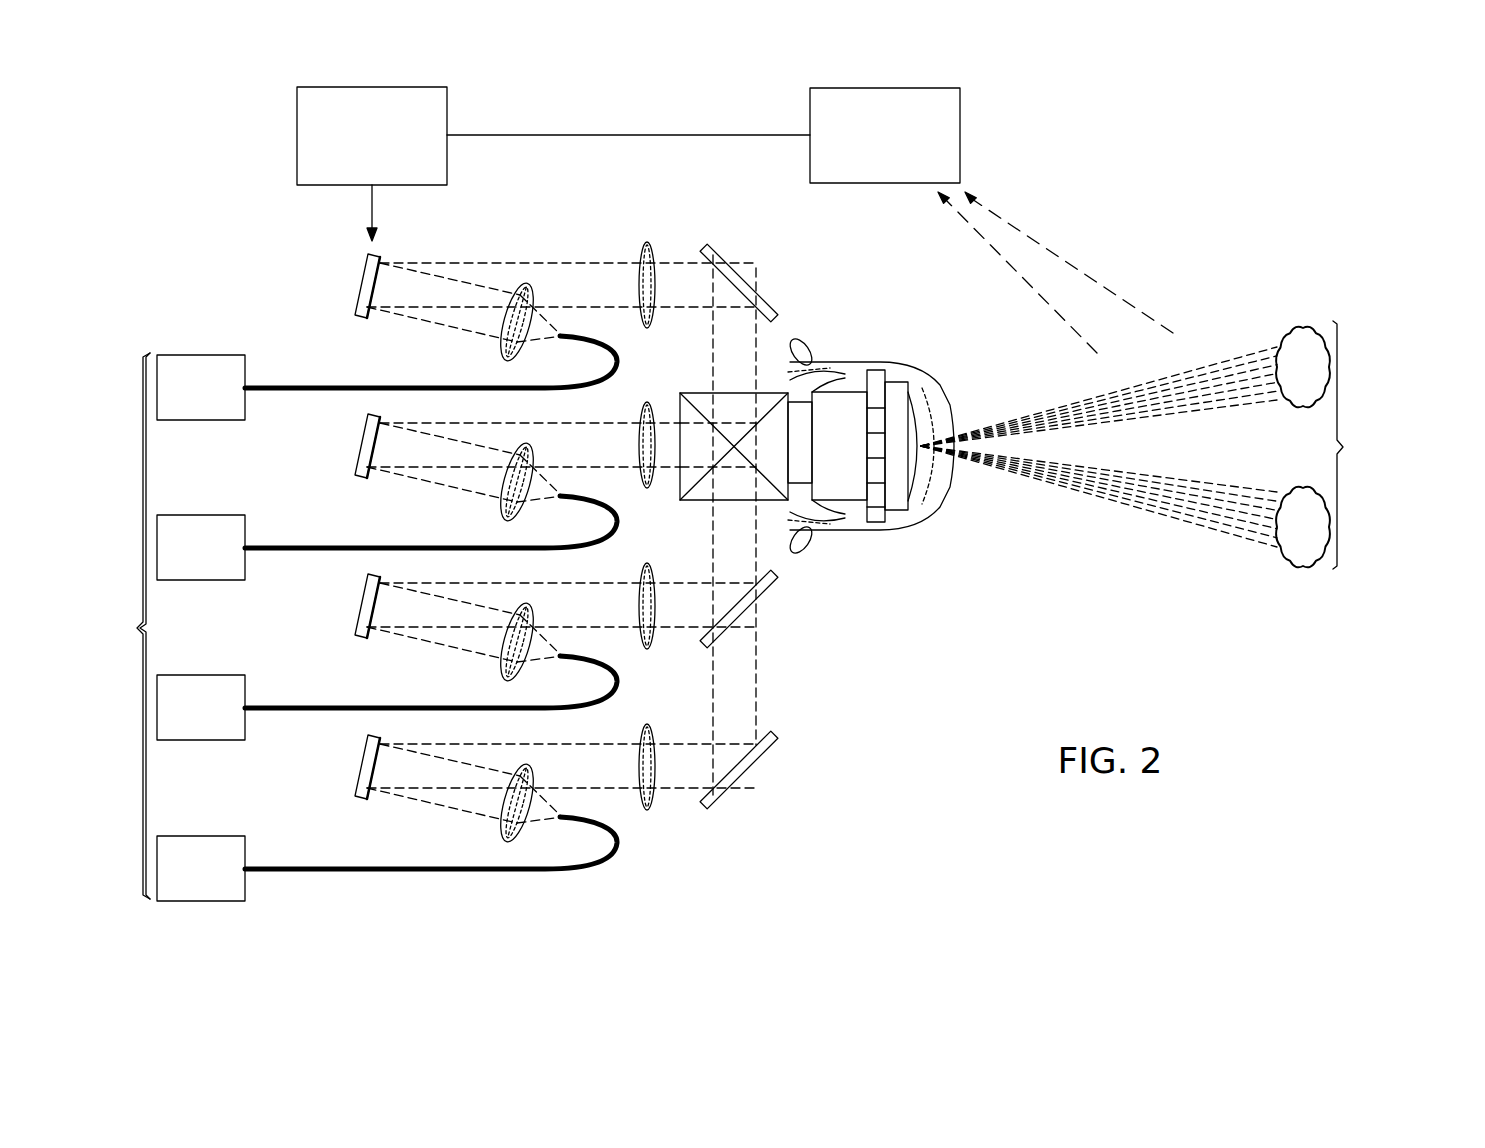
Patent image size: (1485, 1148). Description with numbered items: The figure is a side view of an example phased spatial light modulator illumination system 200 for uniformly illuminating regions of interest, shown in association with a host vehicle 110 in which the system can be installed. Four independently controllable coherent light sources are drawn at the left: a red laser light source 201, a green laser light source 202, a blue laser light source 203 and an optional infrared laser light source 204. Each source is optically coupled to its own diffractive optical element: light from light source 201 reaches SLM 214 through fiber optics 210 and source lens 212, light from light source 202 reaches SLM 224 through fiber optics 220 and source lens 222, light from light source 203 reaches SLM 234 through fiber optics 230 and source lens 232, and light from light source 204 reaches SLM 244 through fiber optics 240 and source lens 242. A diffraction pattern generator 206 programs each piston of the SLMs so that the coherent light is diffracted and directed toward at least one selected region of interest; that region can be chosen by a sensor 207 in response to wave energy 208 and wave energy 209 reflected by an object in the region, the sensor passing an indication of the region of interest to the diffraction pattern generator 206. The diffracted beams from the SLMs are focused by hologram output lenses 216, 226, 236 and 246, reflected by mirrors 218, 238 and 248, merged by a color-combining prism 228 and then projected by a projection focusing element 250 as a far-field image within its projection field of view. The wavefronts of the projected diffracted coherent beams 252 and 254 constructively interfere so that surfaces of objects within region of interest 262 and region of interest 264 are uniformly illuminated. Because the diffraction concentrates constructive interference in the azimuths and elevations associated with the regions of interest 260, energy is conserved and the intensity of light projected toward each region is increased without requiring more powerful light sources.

The illumination system 200 is at (176, 153).
The light source 201 is at (200, 354).
The light source 202 is at (200, 582).
The light source 203 is at (200, 742).
The light source 204 is at (200, 903).
The diffraction pattern generator 206 is at (297, 124).
The sensor 207 is at (960, 125).
The wave energy 208 is at (1080, 270).
The wave energy 209 is at (1037, 292).
The fiber optics 210 is at (292, 387).
The source lens 212 is at (506, 355).
The SLM 214 is at (356, 318).
The hologram output lens 216 is at (645, 242).
The mirror 218 is at (747, 280).
The fiber optics 220 is at (292, 547).
The source lens 222 is at (506, 515).
The SLM 224 is at (356, 478).
The hologram output lens 226 is at (648, 490).
The color-combining prism 228 is at (700, 393).
The fiber optics 230 is at (292, 707).
The source lens 232 is at (506, 675).
The SLM 234 is at (356, 638).
The hologram output lens 236 is at (648, 652).
The mirror 238 is at (776, 574).
The fiber optics 240 is at (397, 871).
The source lens 242 is at (506, 835).
The SLM 244 is at (356, 799).
The hologram output lens 246 is at (648, 812).
The mirror 248 is at (745, 777).
The host vehicle 110 is at (883, 362).
The projection focusing element 250 is at (888, 523).
The projected diffracted coherent beam 252 is at (1165, 413).
The projected diffracted coherent beam 254 is at (1137, 505).
The regions of interest 260 is at (1401, 445).
The region of interest 262 is at (1300, 330).
The region of interest 264 is at (1300, 565).